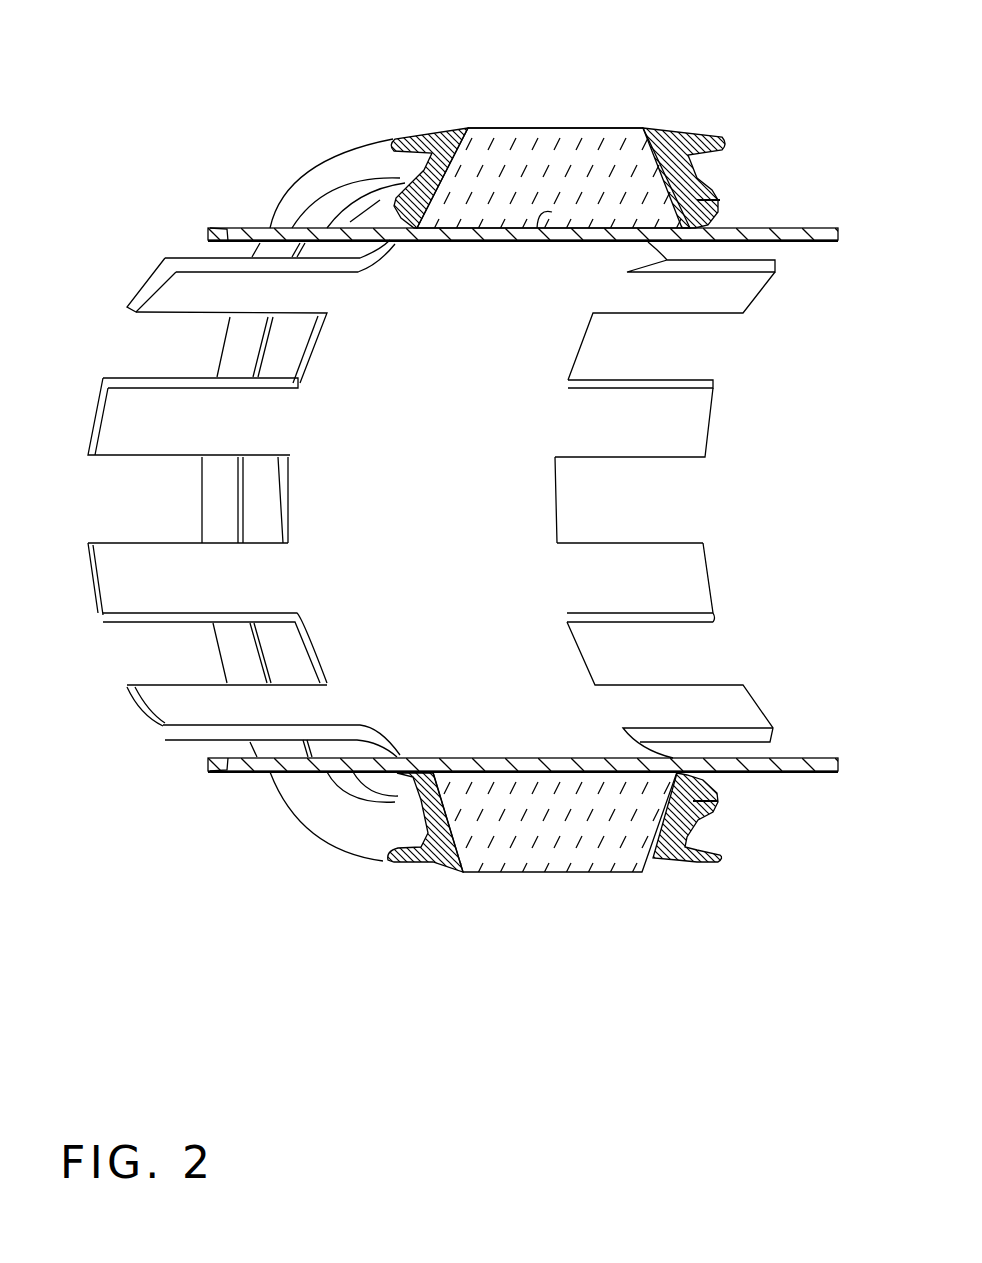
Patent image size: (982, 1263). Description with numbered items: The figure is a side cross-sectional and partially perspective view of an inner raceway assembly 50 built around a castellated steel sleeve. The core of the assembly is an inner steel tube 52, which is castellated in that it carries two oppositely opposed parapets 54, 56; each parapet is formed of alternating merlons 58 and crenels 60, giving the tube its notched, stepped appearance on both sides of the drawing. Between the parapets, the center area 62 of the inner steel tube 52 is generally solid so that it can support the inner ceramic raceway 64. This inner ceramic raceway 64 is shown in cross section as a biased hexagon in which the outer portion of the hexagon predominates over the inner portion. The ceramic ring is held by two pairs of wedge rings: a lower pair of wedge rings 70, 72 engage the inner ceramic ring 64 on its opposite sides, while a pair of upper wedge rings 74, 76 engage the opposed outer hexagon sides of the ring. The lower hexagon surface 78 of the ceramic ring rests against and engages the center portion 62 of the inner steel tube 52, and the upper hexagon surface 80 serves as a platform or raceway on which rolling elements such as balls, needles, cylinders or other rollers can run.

The inner raceway assembly 50 is at (708, 66).
The inner steel tube 52 is at (782, 712).
The parapet 54 is at (91, 378).
The parapet 56 is at (745, 348).
The merlon 58 is at (155, 432).
The crenel 60 is at (155, 511).
The center area 62 is at (420, 468).
The inner ceramic raceway 64 is at (533, 137).
The lower wedge ring 70 is at (418, 228).
The lower wedge ring 72 is at (718, 218).
The upper wedge ring 74 is at (313, 188).
The upper wedge ring 76 is at (682, 138).
The lower hexagon surface 78 is at (547, 210).
The upper hexagon surface 80 is at (490, 128).